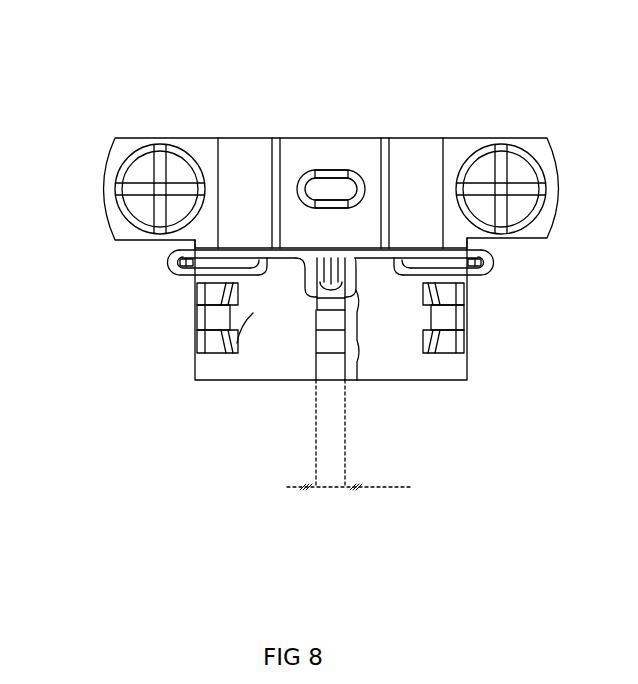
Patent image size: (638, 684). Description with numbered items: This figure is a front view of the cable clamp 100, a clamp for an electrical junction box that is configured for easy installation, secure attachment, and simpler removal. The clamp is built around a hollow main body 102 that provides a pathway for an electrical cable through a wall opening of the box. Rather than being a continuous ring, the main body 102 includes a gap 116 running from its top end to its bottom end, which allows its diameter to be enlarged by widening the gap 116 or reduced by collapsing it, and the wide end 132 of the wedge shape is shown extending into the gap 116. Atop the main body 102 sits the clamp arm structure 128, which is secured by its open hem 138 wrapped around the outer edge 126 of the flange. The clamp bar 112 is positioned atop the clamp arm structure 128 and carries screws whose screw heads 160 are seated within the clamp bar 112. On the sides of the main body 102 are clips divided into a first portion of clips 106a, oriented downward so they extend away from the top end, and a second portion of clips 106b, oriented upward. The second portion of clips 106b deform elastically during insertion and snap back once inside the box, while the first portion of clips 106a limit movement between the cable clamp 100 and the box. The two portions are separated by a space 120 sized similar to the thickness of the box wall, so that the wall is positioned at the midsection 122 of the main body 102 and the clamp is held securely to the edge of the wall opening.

The cable clamp 100 is at (92, 122).
The main body 102 is at (220, 372).
The first portion of clips 106a is at (212, 290).
The second portion of clips 106b is at (212, 343).
The clamp bar 112 is at (329, 152).
The gap 116 is at (348, 435).
The space 120 is at (212, 318).
The midsection 122 is at (253, 313).
The outer edge 126 is at (185, 264).
The clamp arm structure 128 is at (423, 250).
The wide end 132 is at (312, 290).
The open hem 138 is at (176, 258).
The screw heads 160 is at (138, 205).